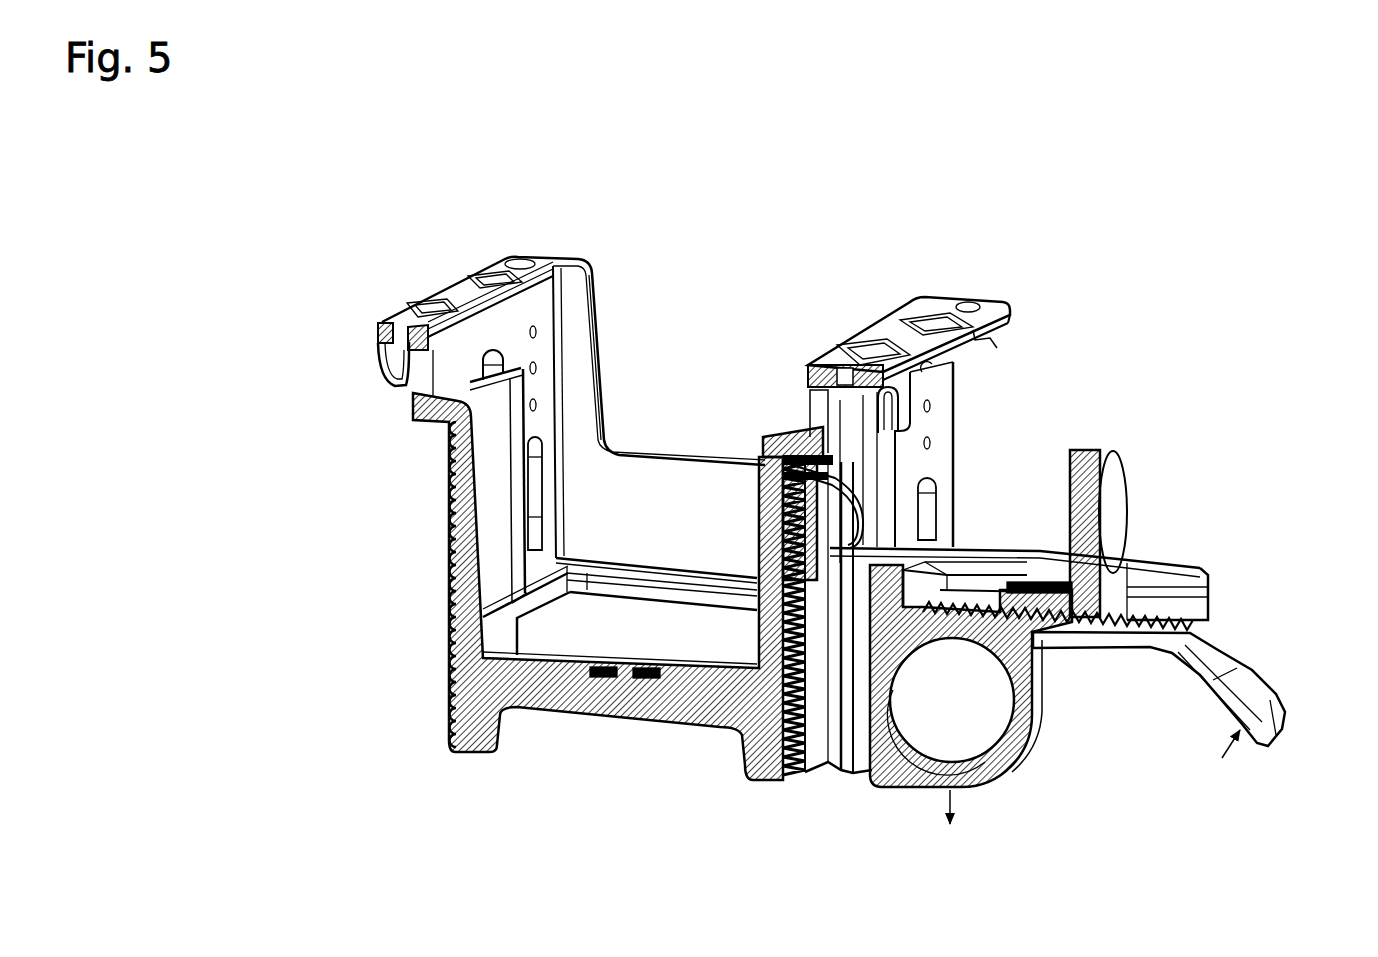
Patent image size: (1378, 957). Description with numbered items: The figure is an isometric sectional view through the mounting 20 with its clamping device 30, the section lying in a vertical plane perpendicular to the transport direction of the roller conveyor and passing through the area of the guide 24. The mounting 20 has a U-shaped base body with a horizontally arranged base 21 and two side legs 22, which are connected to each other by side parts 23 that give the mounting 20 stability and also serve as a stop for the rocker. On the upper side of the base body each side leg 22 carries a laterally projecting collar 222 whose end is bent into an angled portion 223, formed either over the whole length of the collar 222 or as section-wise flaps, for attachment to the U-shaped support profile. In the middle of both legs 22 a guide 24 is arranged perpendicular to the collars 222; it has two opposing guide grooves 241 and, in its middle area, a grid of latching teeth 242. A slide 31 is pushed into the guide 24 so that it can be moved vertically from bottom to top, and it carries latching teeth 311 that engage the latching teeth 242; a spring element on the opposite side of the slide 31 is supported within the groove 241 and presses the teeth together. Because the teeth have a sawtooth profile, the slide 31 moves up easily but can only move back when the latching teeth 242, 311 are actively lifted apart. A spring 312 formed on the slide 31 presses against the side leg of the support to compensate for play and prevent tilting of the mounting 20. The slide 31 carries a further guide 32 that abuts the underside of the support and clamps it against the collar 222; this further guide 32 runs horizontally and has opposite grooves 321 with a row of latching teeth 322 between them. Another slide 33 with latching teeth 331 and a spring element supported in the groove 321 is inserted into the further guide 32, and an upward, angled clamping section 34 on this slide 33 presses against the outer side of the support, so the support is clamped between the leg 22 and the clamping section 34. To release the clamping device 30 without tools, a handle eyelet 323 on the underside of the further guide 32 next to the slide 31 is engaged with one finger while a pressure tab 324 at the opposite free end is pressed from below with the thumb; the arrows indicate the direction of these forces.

The mounting 20 is at (478, 247).
The base 21 is at (623, 697).
The side leg 22 is at (571, 392).
The collar 222 is at (462, 292).
The angled portion 223 is at (385, 367).
The side part 23 is at (592, 470).
The guide 24 is at (603, 642).
The guide groove 241 is at (445, 530).
The latching teeth 242 is at (445, 607).
The clamping device 30 is at (1170, 384).
The slide 31 is at (873, 438).
The latching teeth 311 is at (765, 440).
The spring 312 is at (857, 510).
The further guide 32 is at (1100, 628).
The groove 321 is at (1190, 603).
The latching teeth 322 is at (1157, 600).
The handle eyelet 323 is at (1013, 773).
The pressure tab 324 is at (1263, 702).
The other slide 33 is at (1047, 626).
The latching teeth 331 is at (1073, 597).
The clamping section 34 is at (1086, 450).